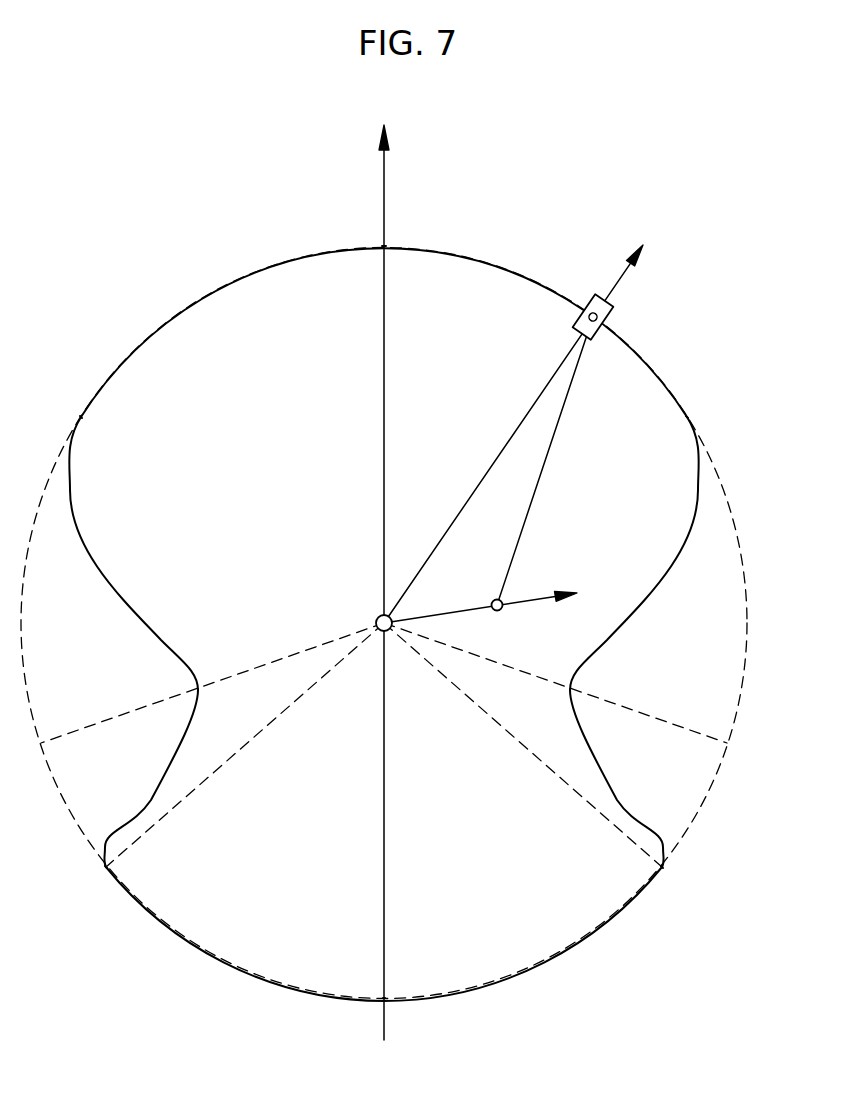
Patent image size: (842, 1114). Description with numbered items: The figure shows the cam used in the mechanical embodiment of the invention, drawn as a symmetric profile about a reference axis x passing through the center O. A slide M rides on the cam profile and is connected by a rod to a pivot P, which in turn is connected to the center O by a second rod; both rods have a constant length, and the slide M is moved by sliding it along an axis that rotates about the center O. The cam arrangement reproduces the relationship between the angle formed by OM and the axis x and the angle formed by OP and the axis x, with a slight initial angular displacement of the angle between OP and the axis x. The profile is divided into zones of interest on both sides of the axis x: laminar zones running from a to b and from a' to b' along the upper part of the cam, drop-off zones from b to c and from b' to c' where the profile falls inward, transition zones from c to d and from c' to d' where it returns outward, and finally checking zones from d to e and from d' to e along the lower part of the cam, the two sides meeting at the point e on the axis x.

The axis Ox x is at (396, 577).
The center O is at (375, 610).
The slide M is at (589, 306).
The pivot P is at (505, 598).
The laminar zone endpoint a is at (396, 234).
The laminar zone endpoint a' is at (367, 234).
The drop-off zone point b is at (700, 398).
The drop-off zone point b' is at (66, 404).
The transition zone point c is at (561, 671).
The transition zone point c' is at (209, 669).
The checking zone point d is at (675, 875).
The checking zone point d' is at (84, 875).
The checking zone endpoint e is at (397, 1022).